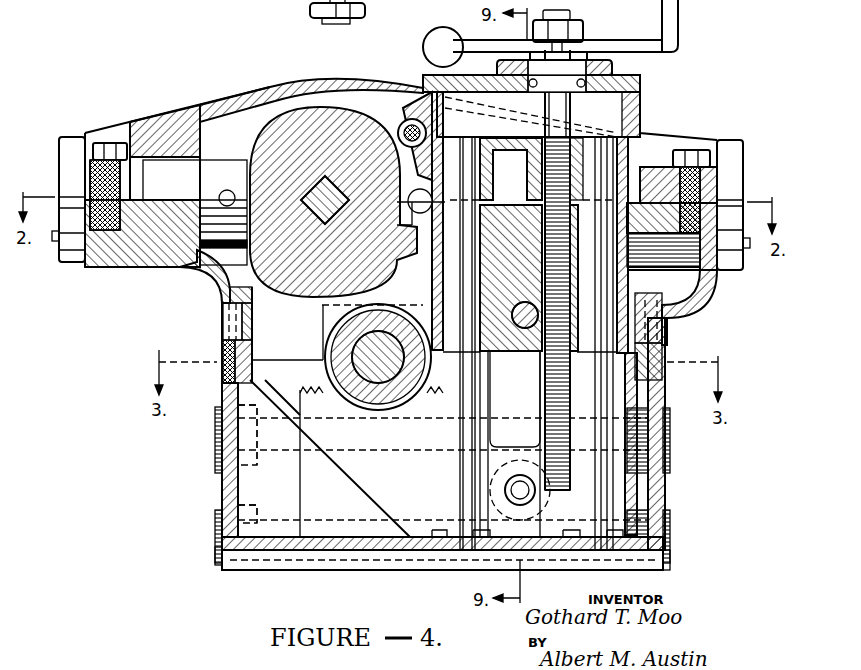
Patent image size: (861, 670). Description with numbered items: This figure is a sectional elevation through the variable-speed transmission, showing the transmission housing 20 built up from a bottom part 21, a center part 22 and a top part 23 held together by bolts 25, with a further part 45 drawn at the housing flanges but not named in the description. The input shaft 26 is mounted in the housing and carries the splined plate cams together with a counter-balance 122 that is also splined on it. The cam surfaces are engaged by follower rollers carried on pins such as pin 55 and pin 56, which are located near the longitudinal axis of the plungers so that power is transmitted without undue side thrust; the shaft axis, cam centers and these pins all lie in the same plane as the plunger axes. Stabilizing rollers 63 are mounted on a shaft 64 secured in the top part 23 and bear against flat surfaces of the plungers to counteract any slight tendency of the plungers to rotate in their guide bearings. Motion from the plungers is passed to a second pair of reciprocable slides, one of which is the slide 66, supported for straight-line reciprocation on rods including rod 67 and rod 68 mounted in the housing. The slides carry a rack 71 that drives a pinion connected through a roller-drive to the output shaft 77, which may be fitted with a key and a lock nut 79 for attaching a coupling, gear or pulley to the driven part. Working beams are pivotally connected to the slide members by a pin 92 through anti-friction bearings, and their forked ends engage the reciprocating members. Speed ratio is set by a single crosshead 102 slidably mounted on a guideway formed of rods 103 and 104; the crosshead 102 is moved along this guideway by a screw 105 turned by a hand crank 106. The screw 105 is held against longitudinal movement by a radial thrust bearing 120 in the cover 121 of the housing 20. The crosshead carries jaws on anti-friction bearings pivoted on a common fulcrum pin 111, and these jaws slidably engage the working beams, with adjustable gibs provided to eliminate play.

The transmission housing 20 is at (187, 275).
The bottom part 21 is at (222, 493).
The center part 22 is at (123, 253).
The top part 23 is at (167, 122).
The bolts 25 is at (223, 337).
The input shaft 26 is at (328, 212).
The cap screw 45 is at (55, 242).
The pin 55 is at (227, 190).
The pin 56 is at (421, 190).
The stabilizing rollers 63 is at (403, 108).
The shaft 64 is at (410, 120).
The reciprocable slide 66 is at (310, 412).
The rod 67 is at (272, 448).
The rod 68 is at (272, 520).
The rack 71 is at (307, 390).
The output shaft 77 is at (377, 365).
The lock nut 79 is at (362, 13).
The pin 92 is at (505, 492).
The crosshead 102 is at (507, 277).
The rod 103 is at (452, 468).
The rod 104 is at (590, 487).
The screw 105 is at (640, 105).
The hand crank 106 is at (680, 8).
The fulcrum pin 111 is at (525, 328).
The radial thrust bearing 120 is at (612, 64).
The cover 121 is at (640, 81).
The counter-balance 122 is at (293, 127).